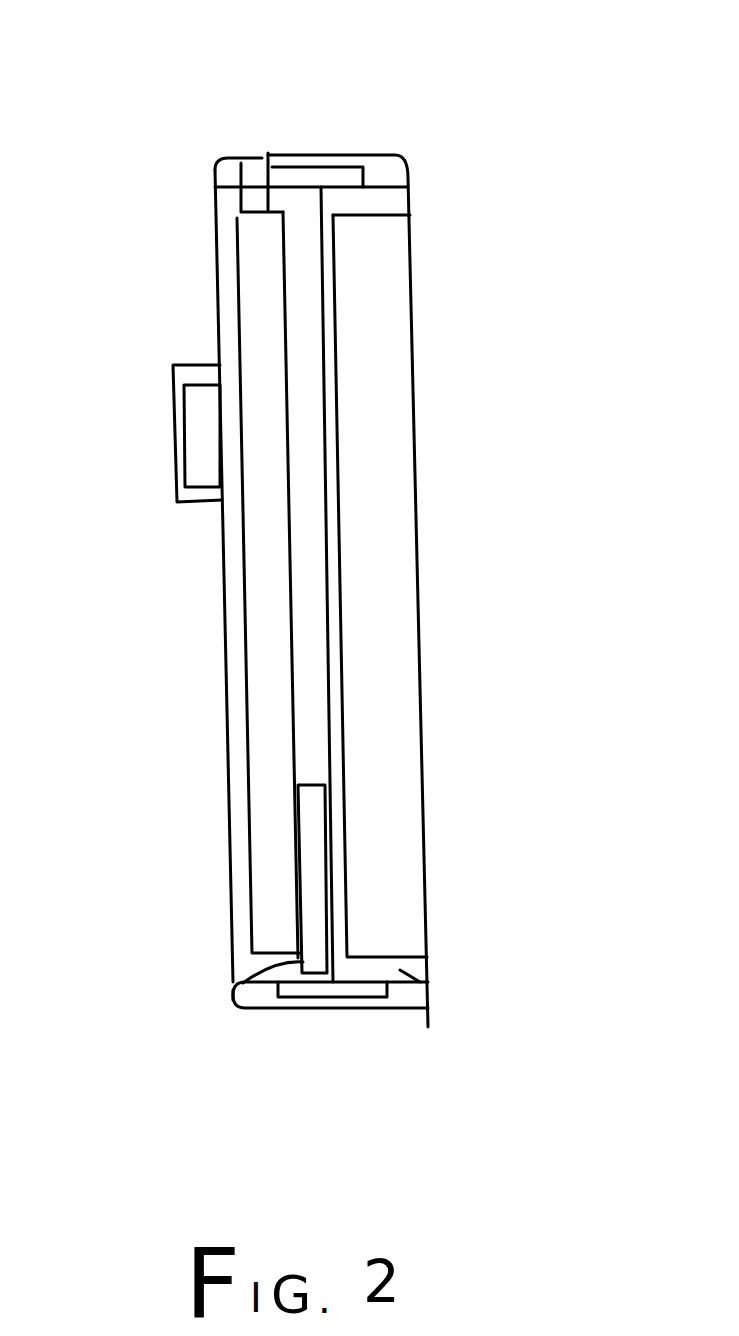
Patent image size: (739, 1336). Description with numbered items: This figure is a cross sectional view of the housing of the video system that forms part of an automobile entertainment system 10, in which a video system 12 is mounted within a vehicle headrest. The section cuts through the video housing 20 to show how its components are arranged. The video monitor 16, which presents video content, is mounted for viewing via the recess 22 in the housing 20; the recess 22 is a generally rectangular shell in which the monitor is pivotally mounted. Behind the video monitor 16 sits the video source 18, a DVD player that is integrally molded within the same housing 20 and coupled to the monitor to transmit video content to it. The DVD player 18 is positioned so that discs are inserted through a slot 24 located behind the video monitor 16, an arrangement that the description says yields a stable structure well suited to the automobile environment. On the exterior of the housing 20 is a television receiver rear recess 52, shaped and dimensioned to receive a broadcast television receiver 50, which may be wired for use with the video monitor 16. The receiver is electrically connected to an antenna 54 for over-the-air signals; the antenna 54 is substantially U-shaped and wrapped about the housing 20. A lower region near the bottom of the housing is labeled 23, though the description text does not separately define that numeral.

The automobile entertainment system 10 is at (301, 570).
The video system 12 is at (358, 150).
The video monitor 16 is at (388, 348).
The video source 18 is at (253, 258).
The video housing 20 is at (292, 163).
The recess 22 is at (427, 1000).
The bottom corner 23 is at (232, 1000).
The slot 24 is at (252, 170).
The broadcast television receiver 50 is at (193, 458).
The television receiver rear recess 52 is at (197, 500).
The antenna 54 is at (327, 1000).